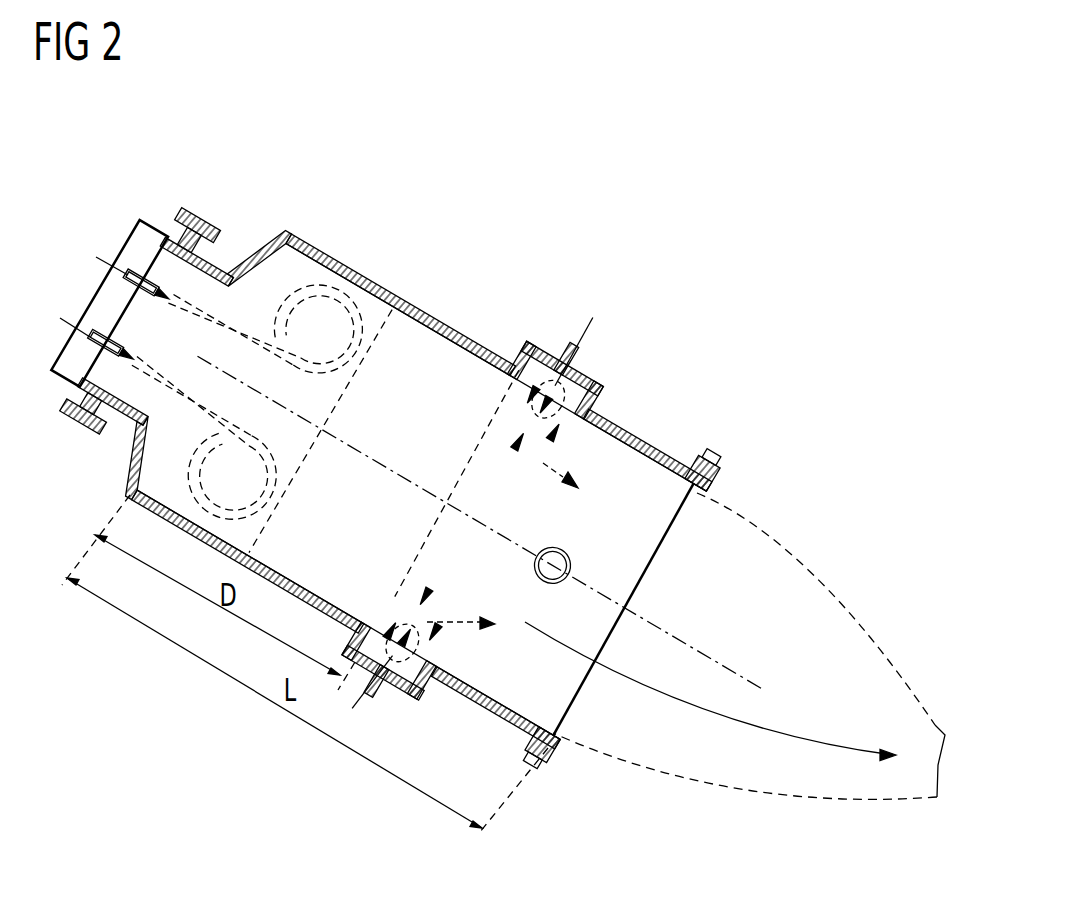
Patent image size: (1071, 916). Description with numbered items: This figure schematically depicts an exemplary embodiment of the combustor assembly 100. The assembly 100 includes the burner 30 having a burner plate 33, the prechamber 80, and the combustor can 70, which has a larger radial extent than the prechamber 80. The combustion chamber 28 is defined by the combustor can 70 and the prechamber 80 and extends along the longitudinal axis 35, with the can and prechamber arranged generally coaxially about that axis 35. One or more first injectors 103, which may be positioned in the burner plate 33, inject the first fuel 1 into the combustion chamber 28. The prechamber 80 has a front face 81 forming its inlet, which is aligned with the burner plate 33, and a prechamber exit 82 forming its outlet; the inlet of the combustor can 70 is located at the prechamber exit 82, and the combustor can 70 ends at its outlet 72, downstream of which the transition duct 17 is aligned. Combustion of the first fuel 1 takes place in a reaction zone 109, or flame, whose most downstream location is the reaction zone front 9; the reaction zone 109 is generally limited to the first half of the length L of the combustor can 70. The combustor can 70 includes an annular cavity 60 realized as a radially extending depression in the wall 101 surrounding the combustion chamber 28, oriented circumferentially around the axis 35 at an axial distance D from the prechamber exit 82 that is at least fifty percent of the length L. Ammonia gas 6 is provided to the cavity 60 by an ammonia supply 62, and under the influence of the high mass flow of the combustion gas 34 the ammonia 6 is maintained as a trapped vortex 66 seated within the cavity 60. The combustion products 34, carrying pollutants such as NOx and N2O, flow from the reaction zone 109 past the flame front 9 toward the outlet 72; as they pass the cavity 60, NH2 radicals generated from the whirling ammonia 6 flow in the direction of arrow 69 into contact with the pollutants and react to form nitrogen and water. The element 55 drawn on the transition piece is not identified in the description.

The combustor assembly 100 is at (178, 303).
The burner 30 is at (103, 280).
The prechamber 80 is at (222, 270).
The combustor can 70 is at (326, 238).
The front face 81 is at (175, 272).
The burner plate 33 is at (73, 368).
The first fuel 1 is at (100, 258).
The combustion chamber 28 is at (135, 320).
The first injectors 103 is at (128, 338).
The prechamber exit 82 is at (183, 397).
The reaction zone 109 is at (340, 365).
The reaction zone front 9 is at (367, 363).
The longitudinal axis 35 is at (385, 455).
The wall 101 is at (453, 330).
The annular cavity 60 is at (515, 437).
The ammonia supply 62 is at (565, 343).
The ammonia gas 6 is at (590, 322).
The trapped vortex 66 is at (565, 420).
The arrow 69 is at (545, 475).
The outlet 72 is at (670, 545).
The transition duct 17 is at (815, 582).
The transition piece wall 55 is at (845, 617).
The combustion gas 34 is at (690, 718).